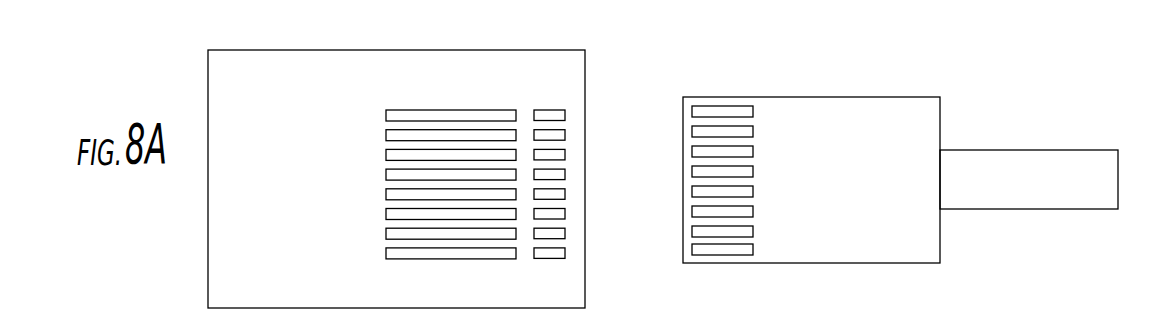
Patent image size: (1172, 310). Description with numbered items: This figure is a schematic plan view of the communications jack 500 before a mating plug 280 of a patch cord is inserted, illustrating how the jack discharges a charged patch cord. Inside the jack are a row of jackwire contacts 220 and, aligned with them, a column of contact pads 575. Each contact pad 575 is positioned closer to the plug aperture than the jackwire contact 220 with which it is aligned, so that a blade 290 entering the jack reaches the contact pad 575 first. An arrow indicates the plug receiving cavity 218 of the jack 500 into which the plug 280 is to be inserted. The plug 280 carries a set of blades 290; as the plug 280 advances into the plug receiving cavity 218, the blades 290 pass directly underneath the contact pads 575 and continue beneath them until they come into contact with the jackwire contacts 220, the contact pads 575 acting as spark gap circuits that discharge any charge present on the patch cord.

The communications jack 500 is at (282, 191).
The jackwire contact 220 is at (471, 110).
The contact pad 575 is at (552, 109).
The plug receiving cavity 218 is at (588, 137).
The plug 280 is at (880, 263).
The blade 290 is at (723, 255).